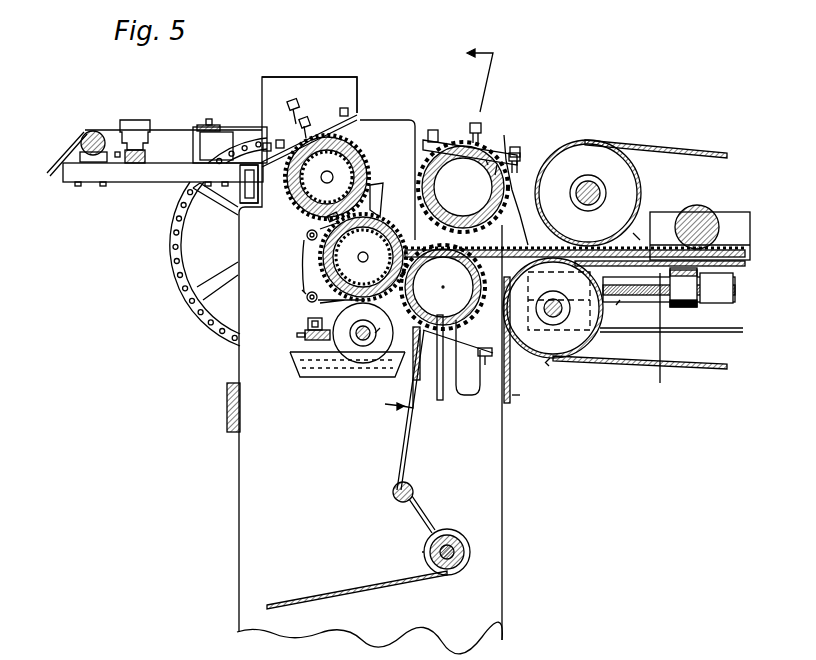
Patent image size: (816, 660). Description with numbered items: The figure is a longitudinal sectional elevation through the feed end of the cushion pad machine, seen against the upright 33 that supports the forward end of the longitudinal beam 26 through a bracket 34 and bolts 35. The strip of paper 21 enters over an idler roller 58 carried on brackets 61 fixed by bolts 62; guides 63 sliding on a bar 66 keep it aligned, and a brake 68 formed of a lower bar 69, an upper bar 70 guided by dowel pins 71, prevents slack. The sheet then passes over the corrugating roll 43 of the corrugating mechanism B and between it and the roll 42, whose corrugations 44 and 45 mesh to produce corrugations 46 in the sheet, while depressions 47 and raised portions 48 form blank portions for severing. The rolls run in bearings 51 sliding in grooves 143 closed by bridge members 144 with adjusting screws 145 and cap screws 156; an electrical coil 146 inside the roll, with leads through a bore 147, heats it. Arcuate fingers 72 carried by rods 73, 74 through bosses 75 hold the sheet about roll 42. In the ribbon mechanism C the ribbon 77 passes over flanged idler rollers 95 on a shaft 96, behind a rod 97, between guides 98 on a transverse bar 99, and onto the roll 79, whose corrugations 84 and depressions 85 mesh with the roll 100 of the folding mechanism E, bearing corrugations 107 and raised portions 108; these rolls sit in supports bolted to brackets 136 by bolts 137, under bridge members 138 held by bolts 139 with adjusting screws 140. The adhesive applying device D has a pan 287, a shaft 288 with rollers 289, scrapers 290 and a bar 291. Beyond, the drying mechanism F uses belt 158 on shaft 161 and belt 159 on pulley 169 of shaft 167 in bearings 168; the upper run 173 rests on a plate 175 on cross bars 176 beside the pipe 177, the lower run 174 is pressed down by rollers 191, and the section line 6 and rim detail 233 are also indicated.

The strip of paper 21 is at (64, 150).
The longitudinal beam 26 is at (681, 312).
The upright 33 is at (483, 503).
The bracket 34 is at (545, 362).
The bolt 35 is at (516, 395).
The corrugating roll 42 is at (325, 258).
The corrugating roll 43 is at (326, 149).
The corrugations 44 is at (305, 210).
The corrugations 45 is at (398, 222).
The corrugations of the corrugated sheet 46 is at (531, 247).
The depressions 47 is at (308, 128).
The raised portions 48 is at (328, 218).
The bearings 51 is at (282, 168).
The idler roller 58 is at (90, 134).
The brackets 61 is at (110, 172).
The bolts 62 is at (100, 186).
The guides 63 is at (141, 120).
The bar 66 is at (135, 163).
The brake 68 is at (195, 155).
The bar 69 is at (192, 150).
The bar 70 is at (199, 125).
The dowel pins 71 is at (208, 119).
The arcuate fingers 72 is at (318, 276).
The rod 73 is at (307, 240).
The rod 74 is at (308, 298).
The bosses 75 is at (303, 290).
The ribbon 77 is at (337, 596).
The roll 79 is at (440, 397).
The corrugations 84 is at (458, 396).
The depressions 85 is at (502, 245).
The flanged idler rollers 95 is at (470, 552).
The shaft 96 is at (453, 557).
The rod 97 is at (413, 488).
The guides 98 is at (414, 385).
The transverse bar 99 is at (400, 323).
The roll 100 is at (522, 192).
The corrugations 107 is at (460, 160).
The raised portions 108 is at (448, 142).
The brackets 136 is at (490, 345).
The bolts 137 is at (485, 365).
The bridge members 138 is at (497, 165).
The bolts 139 is at (518, 155).
The adjusting screws 140 is at (486, 160).
The grooves 143 is at (378, 188).
The bridge members 144 is at (348, 112).
The adjusting screws 145 is at (294, 100).
The electrical coil 146 is at (297, 205).
The bore 147 is at (333, 174).
The cap screws 156 is at (343, 110).
The belt 158 is at (697, 150).
The belt 159 is at (697, 370).
The shaft 161 is at (592, 183).
The transverse shaft 167 is at (557, 322).
The bearings 168 is at (565, 318).
The pulley 169 is at (546, 362).
The upper run 173 is at (722, 276).
The lower run 174 is at (722, 250).
The plate 175 is at (638, 268).
The cross bars 176 is at (690, 293).
The pipe 177 is at (660, 383).
The rollers 191 is at (696, 214).
The wheel rim 233 is at (192, 238).
The pan 287 is at (342, 346).
The shaft 288 is at (337, 378).
The rollers 289 is at (297, 365).
The scrapers 290 is at (310, 336).
The bar 291 is at (308, 322).
The corrugating mechanism B is at (305, 237).
The ribbon applying mechanism C is at (422, 552).
The adhesive applying device D is at (375, 333).
The folding mechanism E is at (508, 142).
The drying mechanism F is at (633, 233).
The section line 6 is at (432, 223).